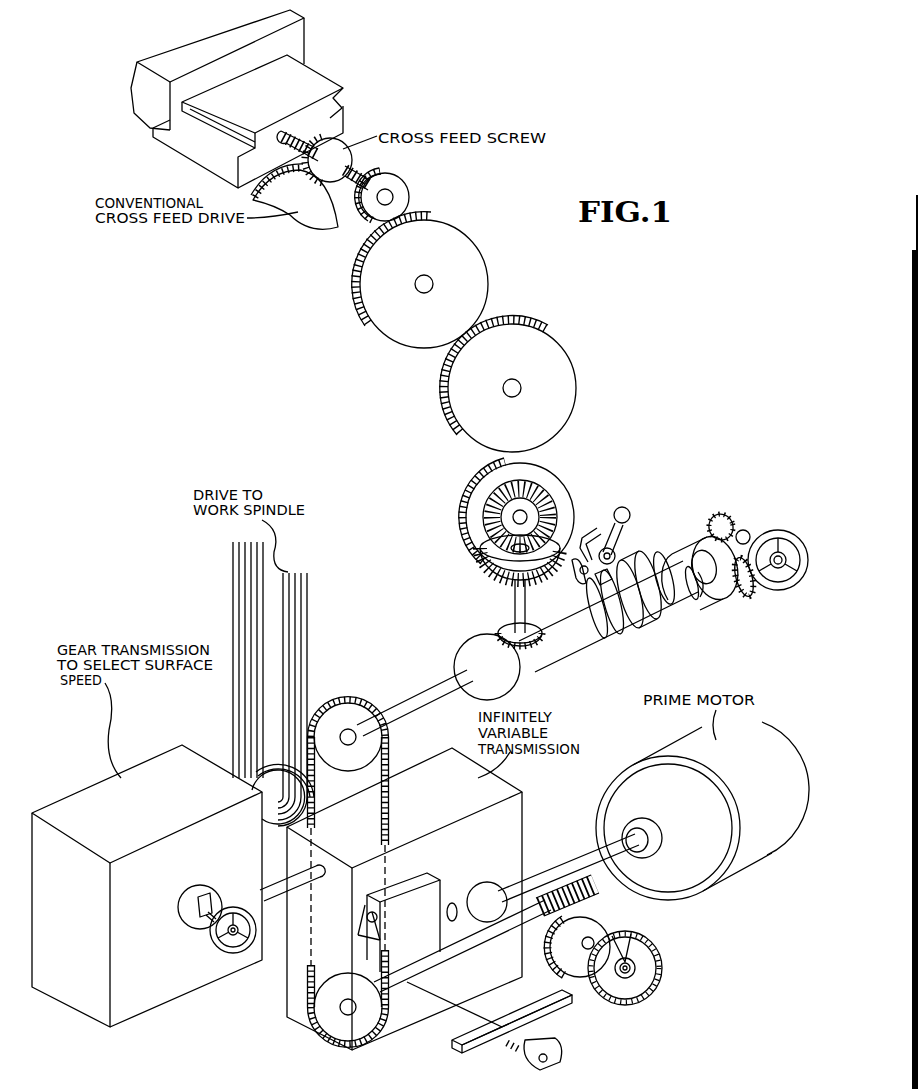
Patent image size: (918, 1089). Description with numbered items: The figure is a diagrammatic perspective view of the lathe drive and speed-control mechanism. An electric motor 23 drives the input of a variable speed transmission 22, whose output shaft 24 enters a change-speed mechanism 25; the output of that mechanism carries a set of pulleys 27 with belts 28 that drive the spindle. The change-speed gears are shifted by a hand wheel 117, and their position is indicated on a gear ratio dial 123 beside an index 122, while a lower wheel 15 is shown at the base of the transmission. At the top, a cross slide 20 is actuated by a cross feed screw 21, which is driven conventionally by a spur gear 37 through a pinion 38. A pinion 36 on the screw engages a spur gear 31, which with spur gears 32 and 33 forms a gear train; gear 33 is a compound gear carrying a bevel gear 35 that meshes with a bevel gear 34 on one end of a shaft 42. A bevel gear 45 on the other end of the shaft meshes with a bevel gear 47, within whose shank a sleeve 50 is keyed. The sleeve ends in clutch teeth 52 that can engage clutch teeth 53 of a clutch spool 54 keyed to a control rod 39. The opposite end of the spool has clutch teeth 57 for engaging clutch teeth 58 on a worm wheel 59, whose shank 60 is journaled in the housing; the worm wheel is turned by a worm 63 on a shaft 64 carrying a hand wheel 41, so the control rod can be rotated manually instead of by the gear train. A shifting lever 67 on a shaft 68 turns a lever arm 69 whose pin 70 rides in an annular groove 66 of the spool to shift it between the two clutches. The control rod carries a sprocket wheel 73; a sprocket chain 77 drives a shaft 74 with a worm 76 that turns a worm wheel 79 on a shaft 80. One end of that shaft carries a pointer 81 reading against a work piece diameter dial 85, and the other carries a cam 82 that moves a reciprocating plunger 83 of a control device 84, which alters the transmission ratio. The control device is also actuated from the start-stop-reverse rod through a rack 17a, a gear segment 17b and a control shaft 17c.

The cross slide 20 is at (300, 37).
The cross feed screw 21 is at (358, 167).
The pinion 38 is at (343, 150).
The pinion 36 is at (403, 192).
The spur gear 37 is at (313, 218).
The spur gear 31 is at (382, 330).
The spur gear 32 is at (455, 410).
The spur gear 33 is at (466, 502).
The bevel gear 35 is at (535, 486).
The bevel gear 34 is at (505, 575).
The shaft 42 is at (514, 611).
The bevel gear 45 is at (533, 628).
The bevel gear 47 is at (516, 688).
The control rod 39 is at (422, 697).
The sleeve 50 is at (572, 672).
The clutch teeth 52 is at (598, 640).
The clutch teeth 53 is at (616, 636).
The clutch spool 54 is at (645, 630).
The annular groove 66 is at (654, 618).
The clutch teeth 57 is at (692, 600).
The clutch teeth 58 is at (706, 594).
The shank 60 is at (700, 565).
The worm wheel 59 is at (750, 590).
The worm 63 is at (728, 522).
The shaft 64 is at (748, 534).
The hand wheel 41 is at (783, 535).
The shifting lever 67 is at (640, 510).
The shaft 68 is at (597, 528).
The lever arm 69 is at (585, 568).
The pin 70 is at (597, 578).
The belts 28 is at (306, 661).
The pulleys 27 is at (258, 789).
The change-speed mechanism 25 is at (88, 1010).
The gear ratio dial 123 is at (190, 906).
The pointer 122 is at (206, 918).
The hand wheel 117 is at (224, 950).
The output shaft 24 is at (270, 890).
The sprocket wheel 73 is at (343, 710).
The pulley 15 is at (336, 1036).
The sprocket chain 77 is at (389, 814).
The variable speed transmission 22 is at (512, 780).
The control device 84 is at (428, 880).
The cam 82 is at (487, 882).
The reciprocating plunger 83 is at (447, 912).
The shaft 74 is at (478, 945).
The worm 76 is at (596, 892).
The worm wheel 79 is at (600, 925).
The work piece diameter dial 85 is at (636, 945).
The shaft 80 is at (606, 988).
The pointer 81 is at (640, 975).
The electric motor 23 is at (752, 733).
The rack 17a is at (472, 1056).
The gear segment 17b is at (528, 1060).
The control shaft 17c is at (364, 910).